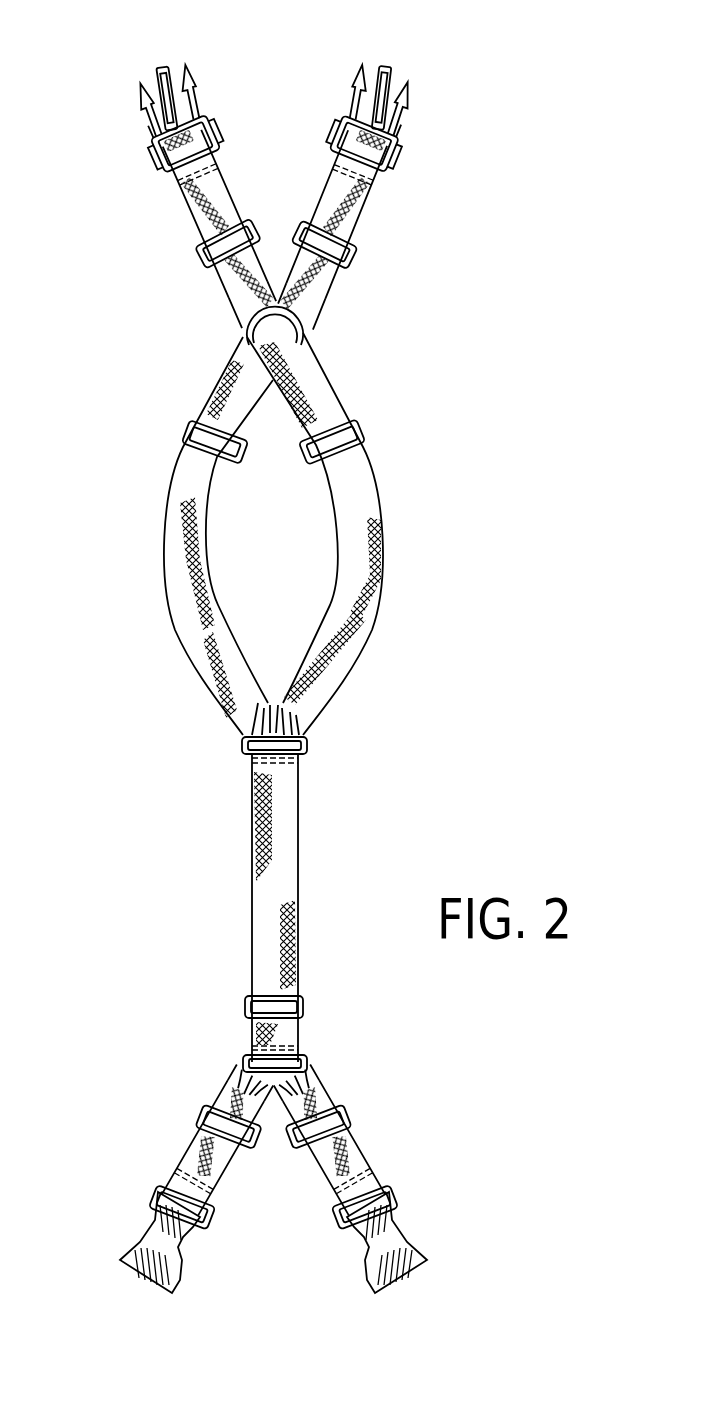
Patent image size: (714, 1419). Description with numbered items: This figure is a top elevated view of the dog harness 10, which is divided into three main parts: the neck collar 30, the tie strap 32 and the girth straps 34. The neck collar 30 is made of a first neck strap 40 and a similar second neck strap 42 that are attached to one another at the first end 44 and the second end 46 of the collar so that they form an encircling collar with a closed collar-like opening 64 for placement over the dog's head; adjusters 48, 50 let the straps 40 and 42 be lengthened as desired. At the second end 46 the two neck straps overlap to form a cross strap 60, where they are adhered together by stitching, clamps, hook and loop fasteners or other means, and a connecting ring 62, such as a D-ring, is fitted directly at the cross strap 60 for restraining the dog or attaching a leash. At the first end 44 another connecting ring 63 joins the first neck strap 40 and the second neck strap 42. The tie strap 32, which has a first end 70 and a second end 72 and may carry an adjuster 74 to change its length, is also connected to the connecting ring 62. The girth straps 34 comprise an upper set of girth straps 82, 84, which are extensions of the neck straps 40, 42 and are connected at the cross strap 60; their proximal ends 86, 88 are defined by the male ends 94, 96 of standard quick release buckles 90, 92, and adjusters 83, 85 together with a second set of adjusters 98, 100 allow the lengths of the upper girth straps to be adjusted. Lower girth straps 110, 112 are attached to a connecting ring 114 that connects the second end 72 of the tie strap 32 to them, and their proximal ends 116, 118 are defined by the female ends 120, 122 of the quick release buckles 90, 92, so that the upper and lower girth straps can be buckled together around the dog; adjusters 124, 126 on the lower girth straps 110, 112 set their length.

The harness 10 is at (522, 196).
The neck collar 30 is at (145, 465).
The tie strap 32 is at (252, 928).
The girth straps 34 is at (175, 276).
The first neck strap 40 is at (382, 596).
The second neck strap 42 is at (166, 540).
The first end of the neck collar 44 is at (328, 706).
The second end of the neck collar 46 is at (305, 326).
The adjuster 48 is at (356, 430).
The adjuster 50 is at (195, 428).
The cross strap 60 is at (250, 306).
The connecting ring 62 is at (300, 308).
The connecting ring 63 is at (307, 744).
The collar-like opening 64 is at (294, 563).
The first end of the tie strap 70 is at (252, 756).
The second end of the tie strap 72 is at (298, 1045).
The adjuster 74 is at (248, 1000).
The upper girth strap 82 is at (181, 198).
The adjuster 83 is at (248, 236).
The upper girth strap 84 is at (360, 217).
The adjuster 85 is at (351, 252).
The proximal end of the upper girth strap 86 is at (137, 103).
The proximal end of the upper girth strap 88 is at (412, 108).
The quick release buckle 90 is at (198, 70).
The quick release buckle 92 is at (351, 85).
The male end 94 is at (160, 66).
The male end 96 is at (392, 66).
The adjuster 98 is at (218, 133).
The adjuster 100 is at (328, 124).
The lower girth strap 110 is at (195, 1150).
The lower girth strap 112 is at (355, 1148).
The connecting ring 114 is at (240, 1074).
The proximal end of the lower girth strap 116 is at (195, 1220).
The proximal end of the lower girth strap 118 is at (381, 1196).
The female end 120 is at (160, 1236).
The female end 122 is at (425, 1262).
The adjuster 124 is at (210, 1110).
The adjuster 126 is at (340, 1110).